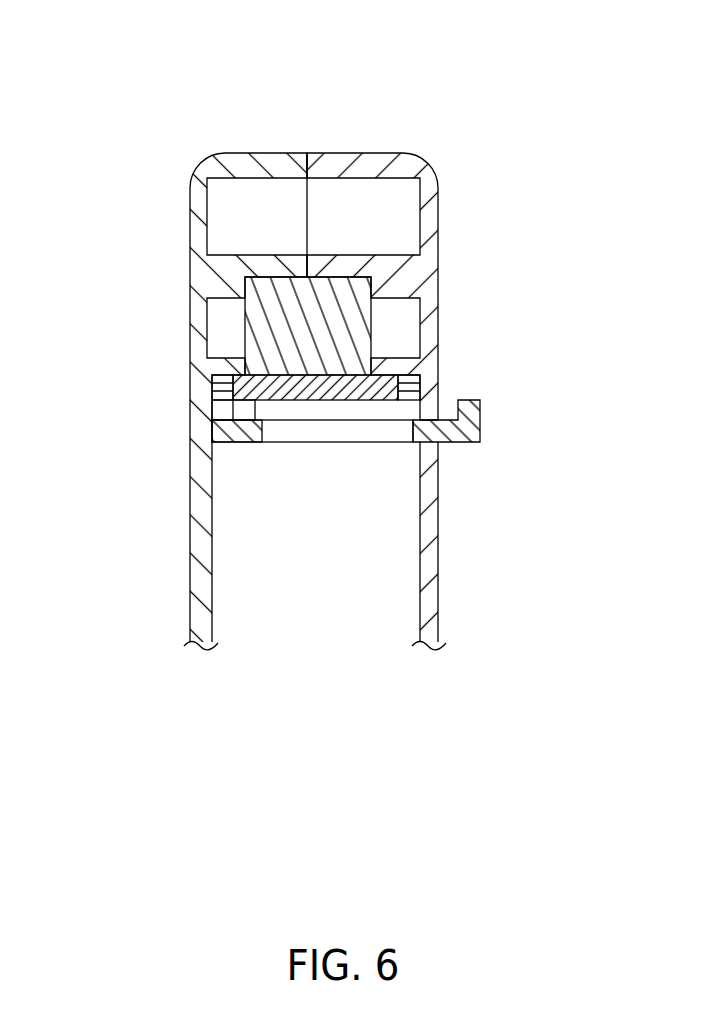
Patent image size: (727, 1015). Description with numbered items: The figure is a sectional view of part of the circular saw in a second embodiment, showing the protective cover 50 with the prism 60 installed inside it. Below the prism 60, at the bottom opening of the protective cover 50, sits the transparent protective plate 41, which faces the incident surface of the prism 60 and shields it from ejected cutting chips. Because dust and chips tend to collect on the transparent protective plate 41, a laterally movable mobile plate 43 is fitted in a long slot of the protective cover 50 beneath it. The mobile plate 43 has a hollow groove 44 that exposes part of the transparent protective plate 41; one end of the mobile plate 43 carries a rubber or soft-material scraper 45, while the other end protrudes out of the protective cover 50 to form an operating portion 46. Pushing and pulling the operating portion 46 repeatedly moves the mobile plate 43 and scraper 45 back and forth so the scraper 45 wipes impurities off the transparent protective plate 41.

The protective cover 50 is at (433, 98).
The prism 60 is at (278, 292).
The transparent protective plate 41 is at (268, 378).
The mobile plate 43 is at (307, 506).
The hollow groove 44 is at (327, 435).
The scraper 45 is at (240, 410).
The operating portion 46 is at (468, 400).